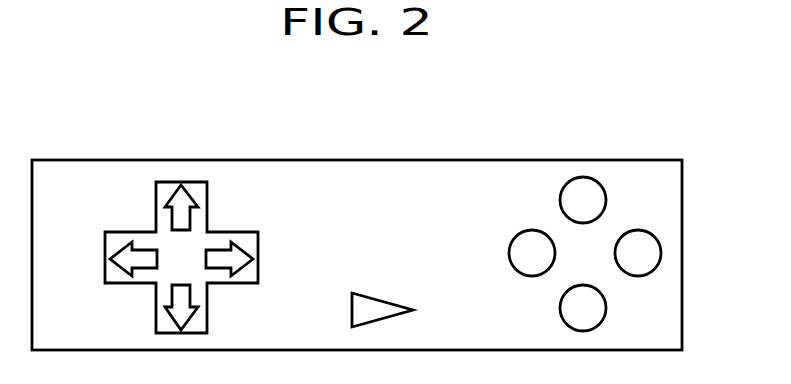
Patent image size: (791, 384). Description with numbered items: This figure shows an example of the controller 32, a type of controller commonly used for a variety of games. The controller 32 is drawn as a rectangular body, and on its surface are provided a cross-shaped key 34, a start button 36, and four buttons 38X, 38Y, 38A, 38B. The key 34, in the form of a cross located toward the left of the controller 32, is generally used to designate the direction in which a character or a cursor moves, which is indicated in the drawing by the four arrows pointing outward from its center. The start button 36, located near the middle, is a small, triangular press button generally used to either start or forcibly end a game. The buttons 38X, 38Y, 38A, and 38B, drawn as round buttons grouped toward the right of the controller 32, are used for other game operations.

The controller 32 is at (159, 160).
The cross-shaped key 34 is at (208, 197).
The start button 36 is at (351, 310).
The button 38Y is at (560, 200).
The button 38X is at (510, 242).
The button 38A is at (560, 309).
The button 38B is at (661, 253).